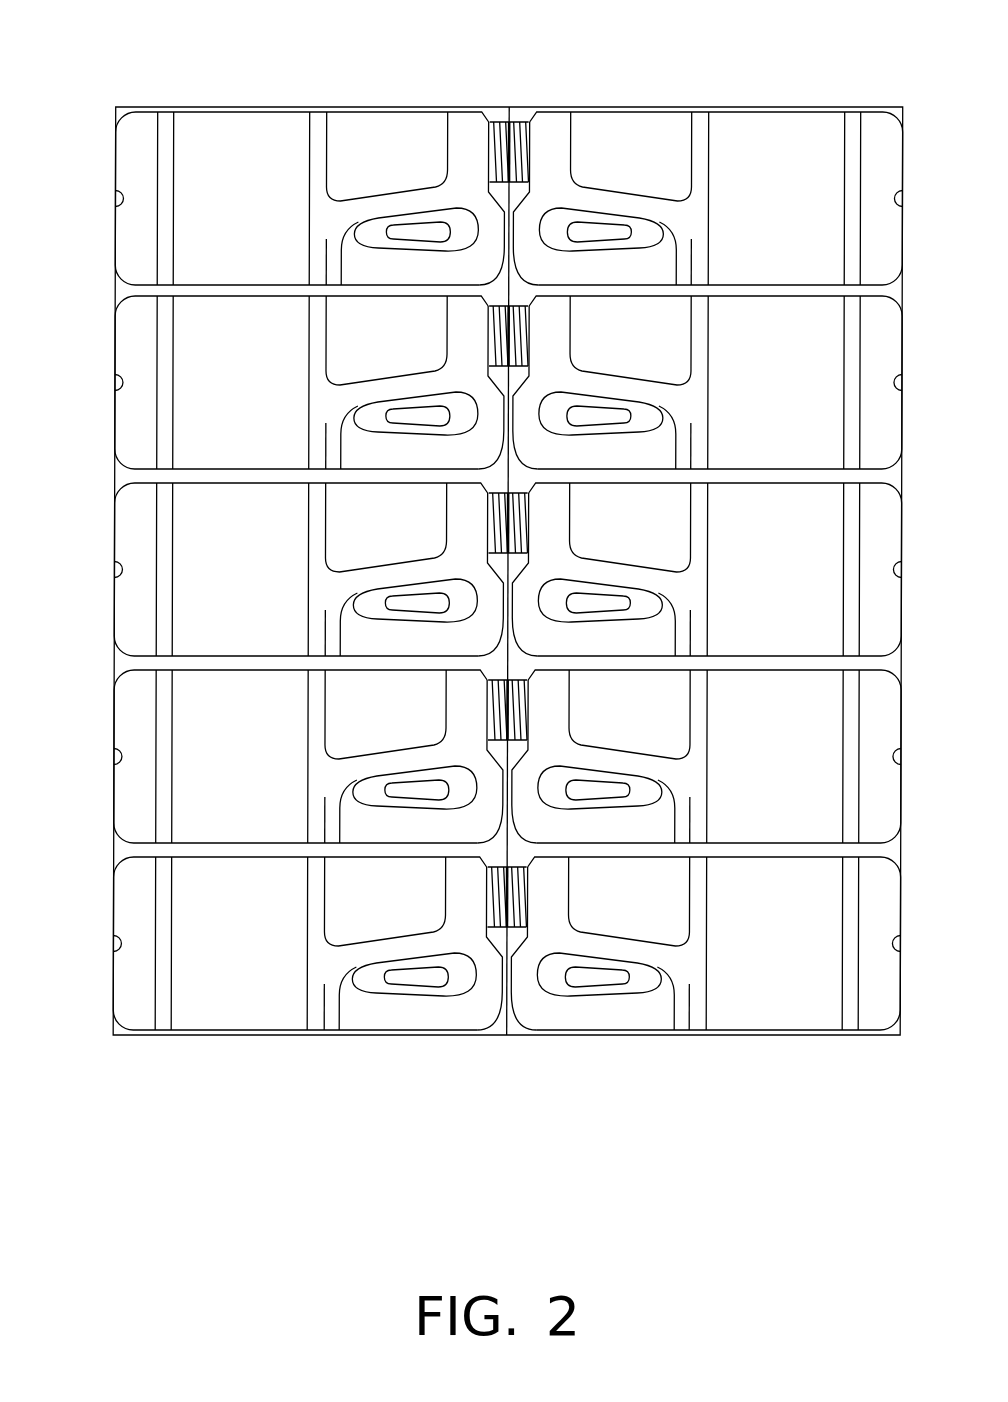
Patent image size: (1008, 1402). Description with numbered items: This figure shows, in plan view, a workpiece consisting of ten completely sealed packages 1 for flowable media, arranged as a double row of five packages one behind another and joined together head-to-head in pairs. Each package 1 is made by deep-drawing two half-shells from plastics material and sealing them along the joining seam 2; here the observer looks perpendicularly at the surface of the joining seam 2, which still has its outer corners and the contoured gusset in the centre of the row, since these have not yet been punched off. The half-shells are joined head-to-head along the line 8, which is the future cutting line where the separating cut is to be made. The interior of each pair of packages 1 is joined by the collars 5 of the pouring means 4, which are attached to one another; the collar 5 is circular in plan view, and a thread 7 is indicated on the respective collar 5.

The package for flowable media 1 is at (237, 136).
The joining seam 2 is at (428, 108).
The pouring means 4 is at (500, 931).
The collar 5 is at (515, 172).
The thread 7 is at (518, 958).
The line 8 is at (507, 1035).